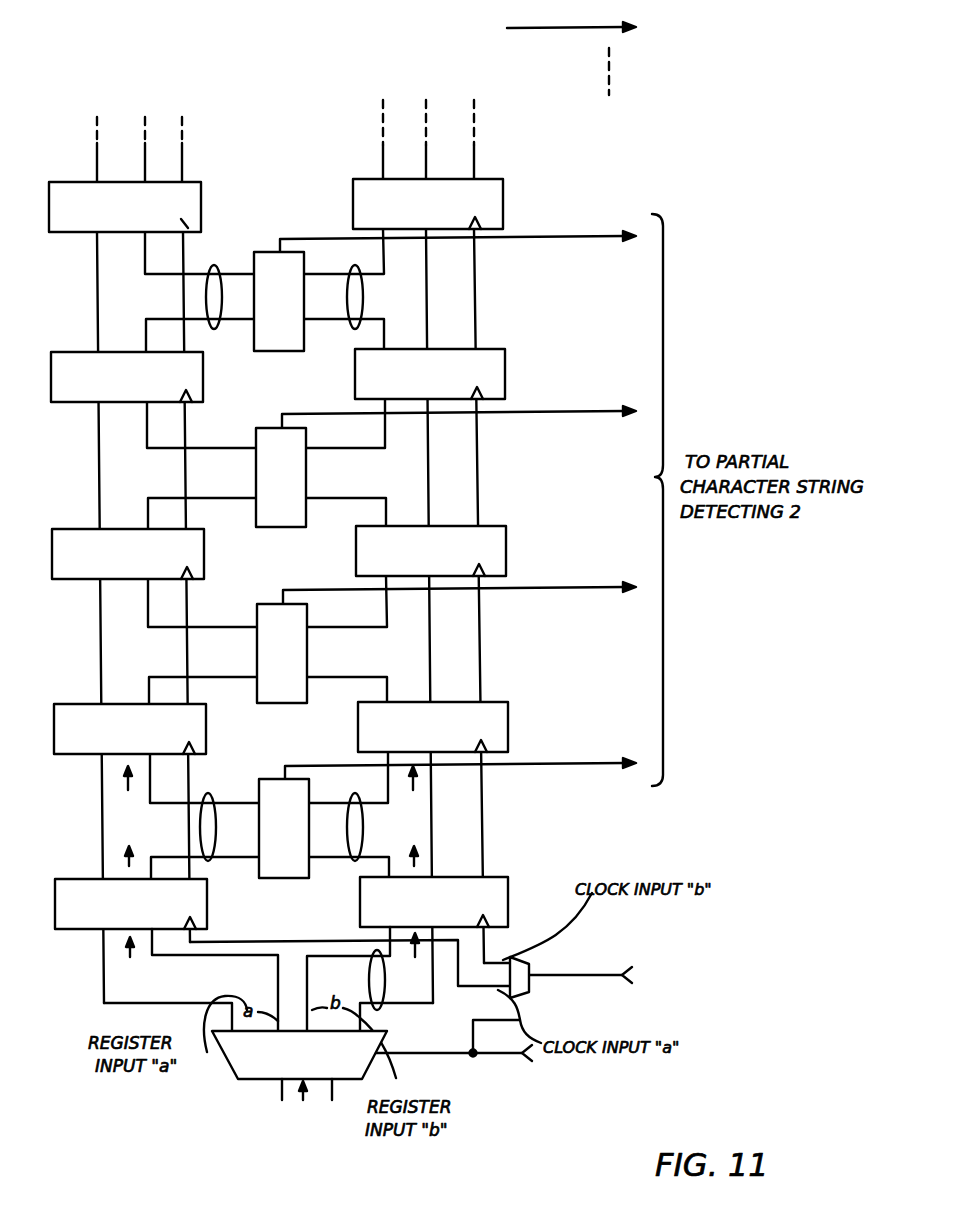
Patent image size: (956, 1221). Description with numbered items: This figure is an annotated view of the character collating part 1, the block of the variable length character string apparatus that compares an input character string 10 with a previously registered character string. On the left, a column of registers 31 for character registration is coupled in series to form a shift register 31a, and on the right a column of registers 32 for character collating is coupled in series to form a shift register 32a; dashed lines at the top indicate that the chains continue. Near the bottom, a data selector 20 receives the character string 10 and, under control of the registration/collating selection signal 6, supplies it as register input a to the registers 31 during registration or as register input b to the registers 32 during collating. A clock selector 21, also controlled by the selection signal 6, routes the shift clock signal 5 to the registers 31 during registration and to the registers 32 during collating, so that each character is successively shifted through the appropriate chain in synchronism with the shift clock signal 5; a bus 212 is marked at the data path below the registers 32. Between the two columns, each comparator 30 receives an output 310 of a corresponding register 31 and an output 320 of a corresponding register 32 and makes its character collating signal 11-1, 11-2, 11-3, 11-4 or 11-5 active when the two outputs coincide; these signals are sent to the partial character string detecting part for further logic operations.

The character collating part 1 is at (292, 141).
The shift clock signal 5 is at (288, 922).
The registration/collating selection signal 6 is at (508, 1057).
The input character string 10 is at (307, 1104).
The data selector 20 is at (378, 1031).
The clock selector 21 is at (531, 986).
The comparator 30 is at (265, 252).
The register for character registration 31 is at (65, 182).
The shift register 31a is at (110, 126).
The register for character collating 32 is at (505, 181).
The shift register 32a is at (397, 126).
The data bus 212 is at (385, 978).
The output of register 31 310 is at (240, 297).
The output of register 32 320 is at (318, 297).
The character collating signal 11-1 is at (575, 764).
The character collating signal 11-2 is at (585, 588).
The character collating signal 11-3 is at (583, 413).
The character collating signal 11-4 is at (571, 237).
The character collating signal 11-5 is at (558, 26).